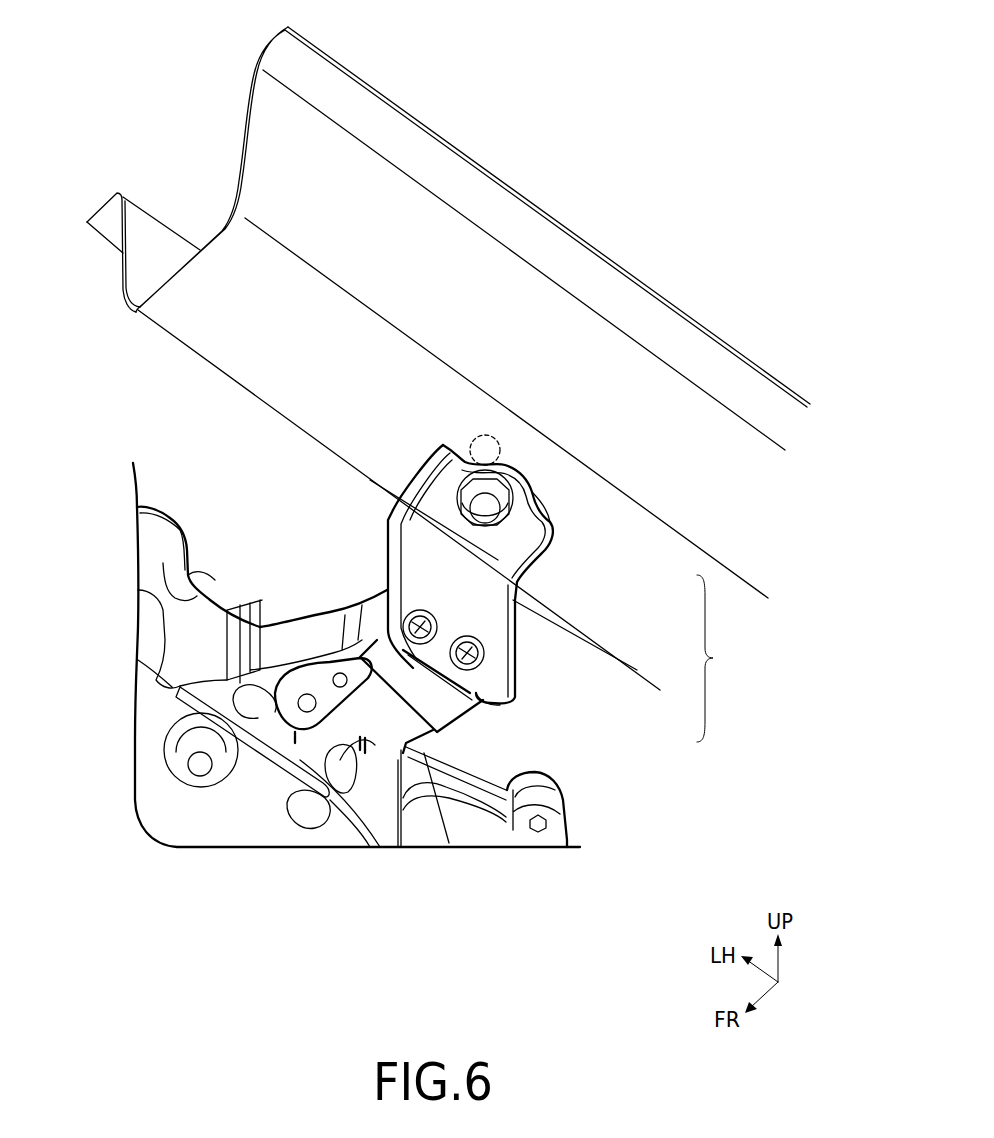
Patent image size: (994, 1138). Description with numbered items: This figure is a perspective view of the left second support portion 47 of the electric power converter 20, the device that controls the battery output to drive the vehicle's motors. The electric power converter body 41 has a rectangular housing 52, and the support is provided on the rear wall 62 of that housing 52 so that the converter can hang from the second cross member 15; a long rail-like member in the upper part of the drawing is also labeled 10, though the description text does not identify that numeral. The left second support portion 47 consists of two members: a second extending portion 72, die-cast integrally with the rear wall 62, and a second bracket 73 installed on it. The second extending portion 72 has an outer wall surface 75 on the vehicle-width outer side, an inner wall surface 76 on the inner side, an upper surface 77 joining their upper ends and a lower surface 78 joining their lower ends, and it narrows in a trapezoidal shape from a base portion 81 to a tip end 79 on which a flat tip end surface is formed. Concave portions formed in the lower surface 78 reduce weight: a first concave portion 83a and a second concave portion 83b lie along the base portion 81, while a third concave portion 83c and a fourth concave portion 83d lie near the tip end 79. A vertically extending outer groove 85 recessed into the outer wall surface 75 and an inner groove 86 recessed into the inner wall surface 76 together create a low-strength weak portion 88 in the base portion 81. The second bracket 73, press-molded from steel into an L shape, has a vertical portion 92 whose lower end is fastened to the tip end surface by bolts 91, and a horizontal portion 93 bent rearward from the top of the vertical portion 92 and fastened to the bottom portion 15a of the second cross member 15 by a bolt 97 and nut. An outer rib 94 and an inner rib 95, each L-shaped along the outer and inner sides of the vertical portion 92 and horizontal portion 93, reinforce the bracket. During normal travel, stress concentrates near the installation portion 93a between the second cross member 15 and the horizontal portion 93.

The vehicle body rail 10 is at (462, 127).
The second cross member 15 is at (525, 300).
The bottom portion 15a is at (242, 330).
The electric power converter 20 is at (137, 433).
The electric power converter body 41 is at (577, 807).
The left second support portion 47 is at (723, 658).
The housing 52 is at (210, 823).
The rear wall 62 is at (187, 557).
The second extending portion 72 is at (439, 736).
The second bracket 73 is at (523, 588).
The outer wall surface 75 is at (310, 627).
The inner wall surface 76 is at (420, 787).
The upper surface 77 is at (365, 598).
The lower surface 78 is at (293, 793).
The tip end 79 is at (517, 690).
The base portion 81 is at (263, 743).
The first concave portion 83a is at (207, 753).
The second concave portion 83b is at (347, 760).
The third concave portion 83c is at (358, 767).
The fourth concave portion 83d is at (413, 753).
The outer groove 85 is at (190, 650).
The inner groove 86 is at (401, 847).
The weak portion 88 is at (303, 757).
The bolts 91 is at (467, 637).
The vertical portion 92 is at (423, 547).
The horizontal portion 93 is at (417, 470).
The installation portion 93a is at (513, 600).
The outer rib 94 is at (443, 480).
The inner rib 95 is at (553, 533).
The bolt 97 is at (497, 480).